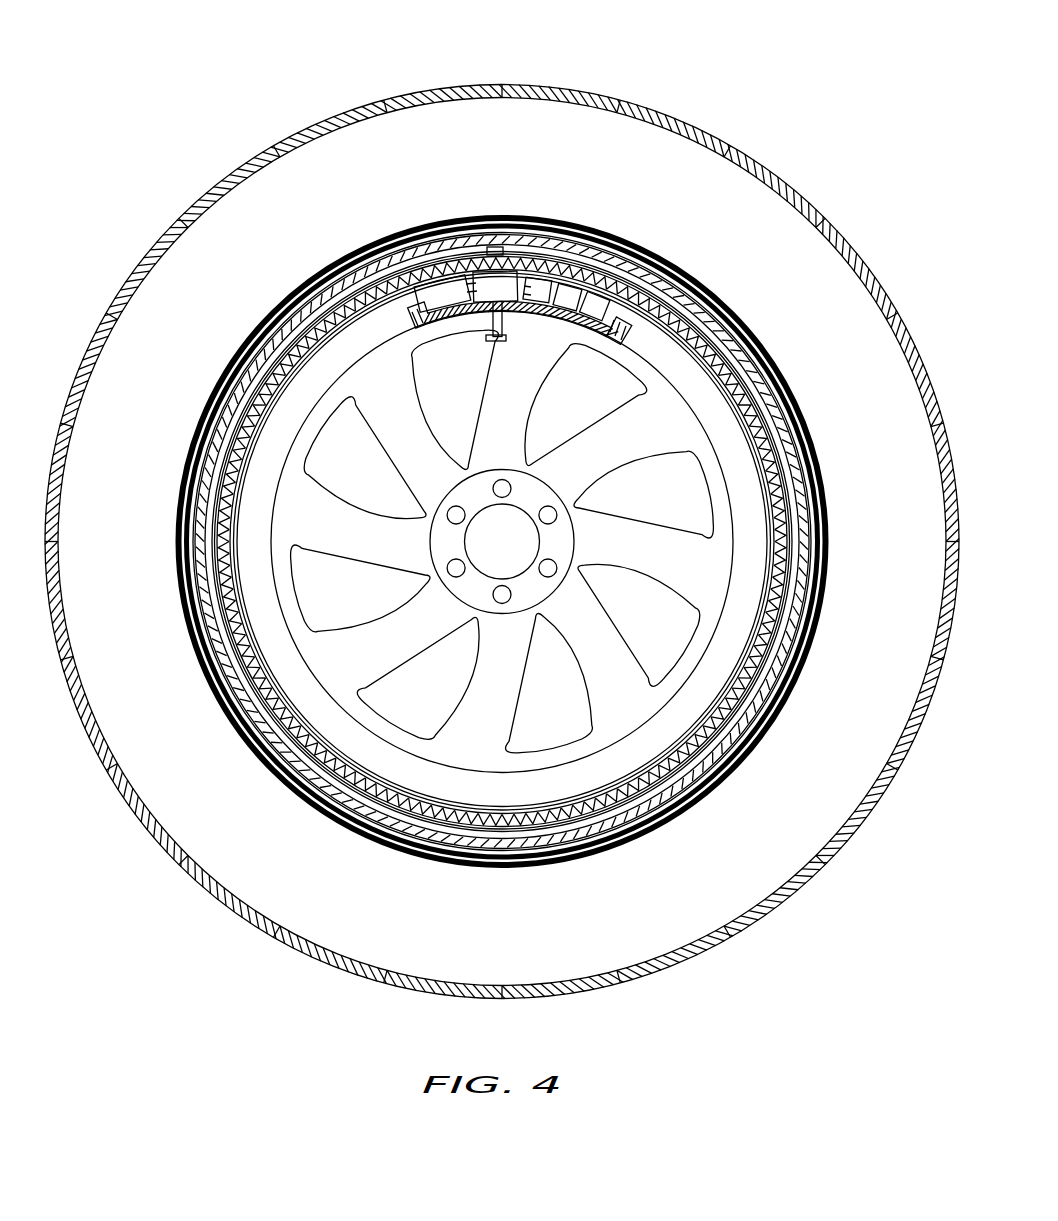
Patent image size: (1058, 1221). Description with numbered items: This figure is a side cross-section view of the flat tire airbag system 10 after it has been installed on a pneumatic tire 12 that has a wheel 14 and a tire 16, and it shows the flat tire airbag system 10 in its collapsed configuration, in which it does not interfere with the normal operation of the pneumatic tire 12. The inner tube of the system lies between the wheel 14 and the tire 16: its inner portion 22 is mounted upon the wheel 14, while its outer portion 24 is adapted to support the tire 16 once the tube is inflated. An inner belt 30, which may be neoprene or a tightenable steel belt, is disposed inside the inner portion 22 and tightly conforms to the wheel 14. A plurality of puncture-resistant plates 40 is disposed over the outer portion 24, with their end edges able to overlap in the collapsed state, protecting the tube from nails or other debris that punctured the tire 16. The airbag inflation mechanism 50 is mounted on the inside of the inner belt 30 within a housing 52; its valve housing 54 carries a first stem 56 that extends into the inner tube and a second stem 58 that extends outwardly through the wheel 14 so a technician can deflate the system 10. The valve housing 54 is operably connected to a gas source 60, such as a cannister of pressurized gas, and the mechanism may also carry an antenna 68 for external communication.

The flat tire airbag system 10 is at (529, 549).
The pneumatic tire 12 is at (529, 549).
The wheel 14 is at (258, 420).
The tire 16 is at (156, 238).
The inner portion 22 is at (392, 262).
The outer portion 24 is at (426, 243).
The inner belt 30 is at (250, 612).
The puncture-resistant plates 40 is at (302, 290).
The airbag inflation mechanism 50 is at (512, 291).
The housing 52 is at (574, 331).
The valve housing 54 is at (478, 296).
The first stem 56 is at (491, 248).
The second stem 58 is at (493, 340).
The gas source 60 is at (515, 332).
The antenna 68 is at (630, 331).